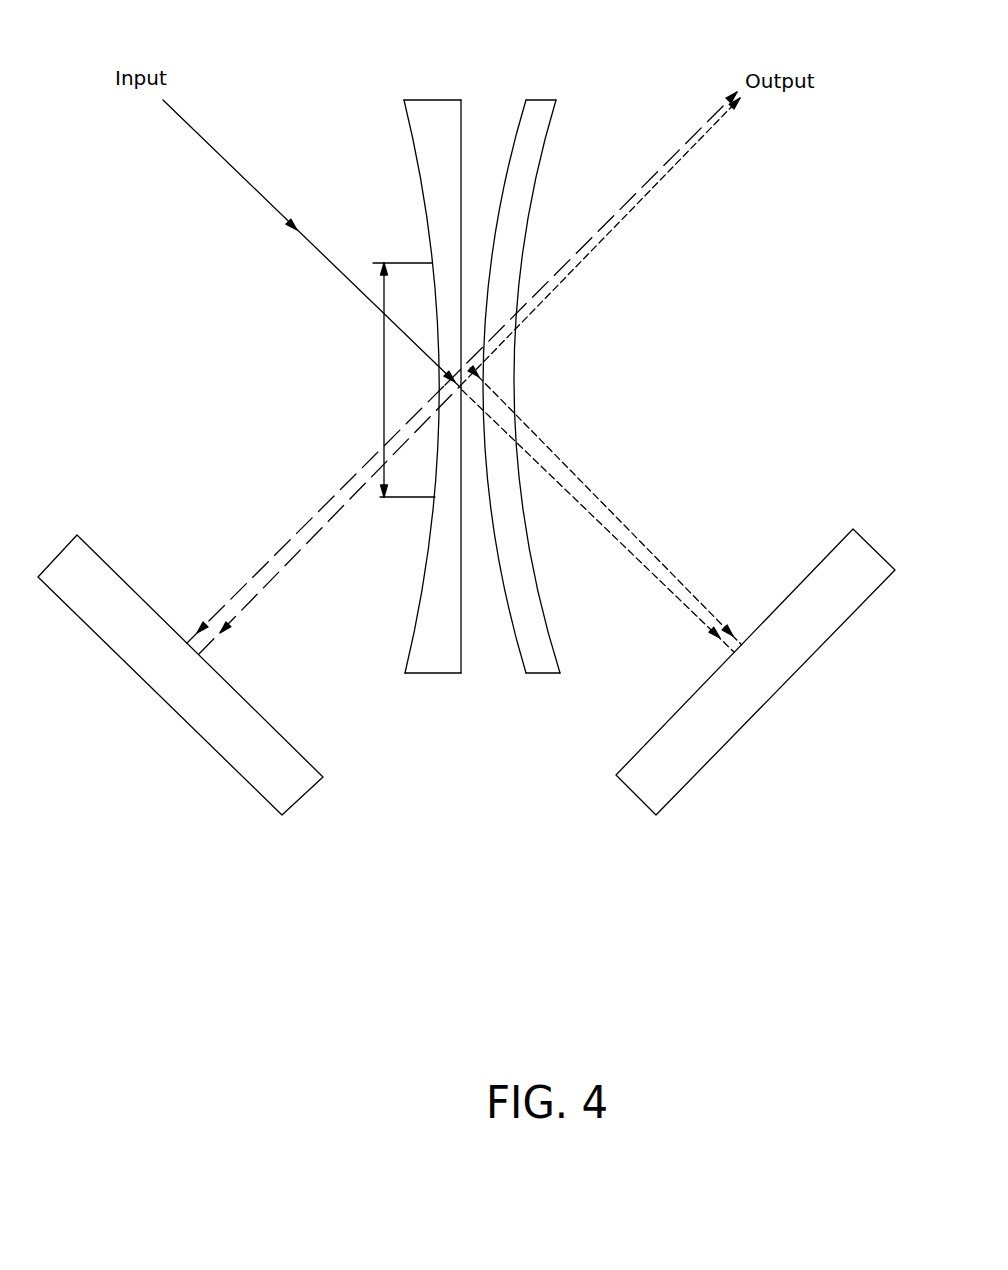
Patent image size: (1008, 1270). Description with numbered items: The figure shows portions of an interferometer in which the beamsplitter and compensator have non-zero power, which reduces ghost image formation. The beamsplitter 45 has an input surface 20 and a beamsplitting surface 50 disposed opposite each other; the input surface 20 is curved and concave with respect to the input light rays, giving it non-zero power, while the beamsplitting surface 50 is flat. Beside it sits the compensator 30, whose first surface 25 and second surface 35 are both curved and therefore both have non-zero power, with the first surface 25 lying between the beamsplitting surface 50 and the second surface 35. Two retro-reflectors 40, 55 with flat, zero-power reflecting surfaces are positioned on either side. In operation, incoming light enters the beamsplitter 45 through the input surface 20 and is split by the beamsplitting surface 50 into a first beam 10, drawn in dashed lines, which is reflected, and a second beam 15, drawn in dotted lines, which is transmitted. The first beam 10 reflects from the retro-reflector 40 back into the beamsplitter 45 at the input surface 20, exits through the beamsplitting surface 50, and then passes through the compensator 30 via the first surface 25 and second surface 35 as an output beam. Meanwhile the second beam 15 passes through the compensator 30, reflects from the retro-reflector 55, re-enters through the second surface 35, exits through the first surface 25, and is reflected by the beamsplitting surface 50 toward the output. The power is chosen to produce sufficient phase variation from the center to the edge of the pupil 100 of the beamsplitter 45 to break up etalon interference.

The first beam 10 is at (288, 538).
The second beam 15 is at (610, 528).
The input surface 20 is at (425, 439).
The first surface 25 is at (515, 137).
The compensator 30 is at (545, 343).
The second surface 35 is at (548, 133).
The retro-reflector 40 is at (242, 779).
The beamsplitter 45 is at (447, 675).
The beamsplitting surface 50 is at (463, 634).
The retro-reflector 55 is at (705, 765).
The pupil 100 is at (384, 347).